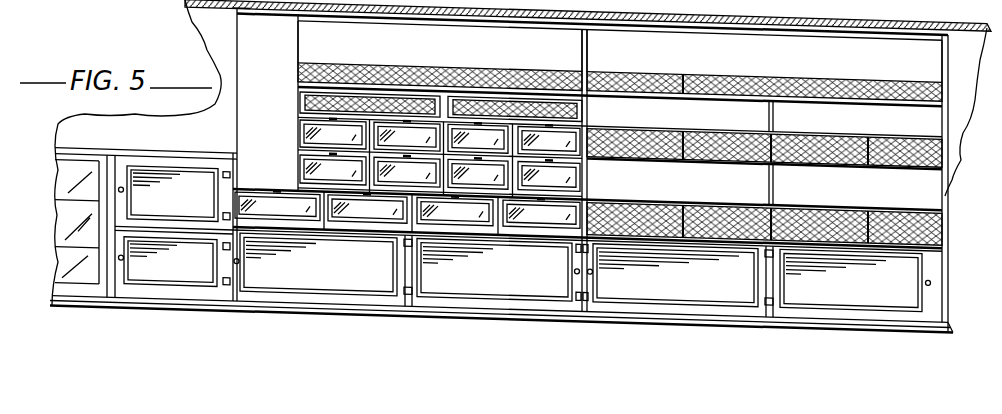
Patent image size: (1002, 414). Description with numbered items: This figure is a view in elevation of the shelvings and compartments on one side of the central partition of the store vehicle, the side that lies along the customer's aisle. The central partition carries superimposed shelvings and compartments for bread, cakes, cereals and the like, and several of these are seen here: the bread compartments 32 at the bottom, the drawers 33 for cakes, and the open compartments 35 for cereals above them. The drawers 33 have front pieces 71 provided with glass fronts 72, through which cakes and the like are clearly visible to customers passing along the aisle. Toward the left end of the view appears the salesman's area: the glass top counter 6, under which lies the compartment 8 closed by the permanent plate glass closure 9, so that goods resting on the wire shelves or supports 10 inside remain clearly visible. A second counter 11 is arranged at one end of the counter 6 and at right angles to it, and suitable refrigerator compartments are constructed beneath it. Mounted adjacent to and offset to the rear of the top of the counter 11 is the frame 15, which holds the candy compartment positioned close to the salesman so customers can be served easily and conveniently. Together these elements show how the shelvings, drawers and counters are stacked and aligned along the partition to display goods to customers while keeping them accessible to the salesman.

The glass top counter 6 is at (89, 148).
The compartment 8 is at (68, 183).
The permanent plate glass closure 9 is at (58, 278).
The wire shelves or supports 10 is at (57, 238).
The second counter 11 is at (179, 148).
The frame 15 is at (250, 38).
The bread compartment 32 is at (440, 283).
The drawers 33 is at (522, 218).
The cereals compartment 35 is at (620, 51).
The front piece 71 is at (302, 117).
The glass front 72 is at (300, 162).